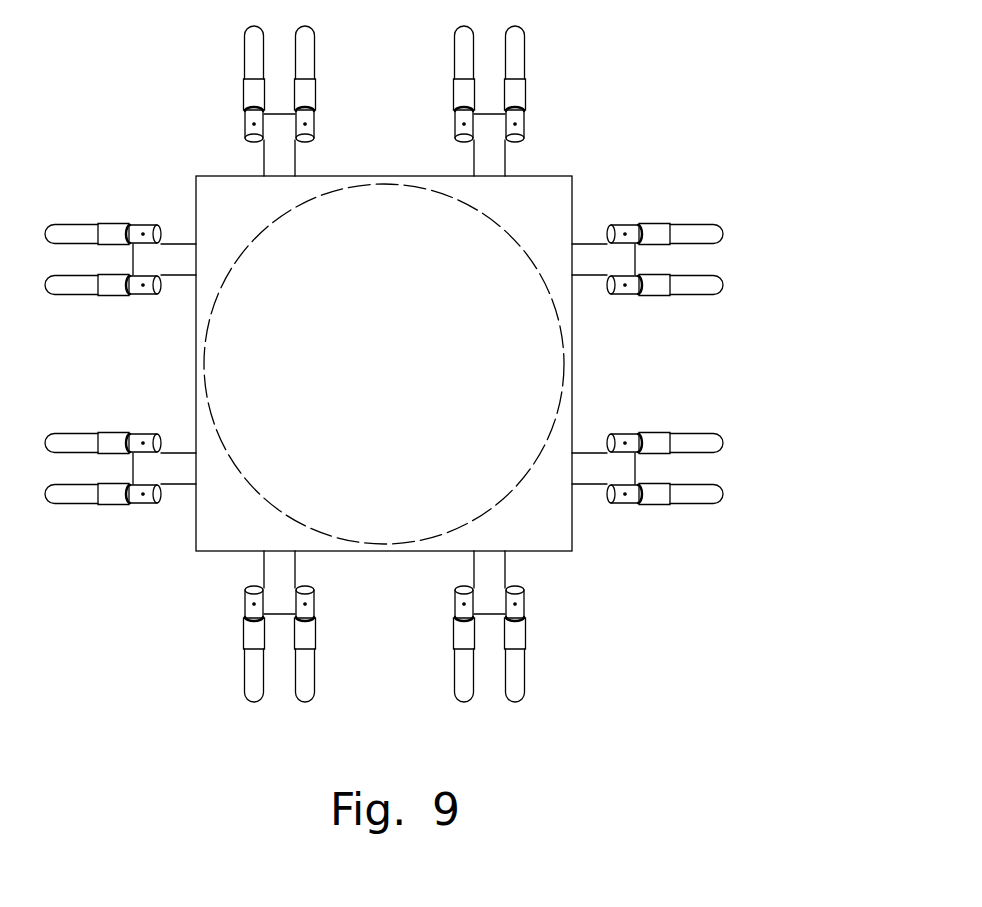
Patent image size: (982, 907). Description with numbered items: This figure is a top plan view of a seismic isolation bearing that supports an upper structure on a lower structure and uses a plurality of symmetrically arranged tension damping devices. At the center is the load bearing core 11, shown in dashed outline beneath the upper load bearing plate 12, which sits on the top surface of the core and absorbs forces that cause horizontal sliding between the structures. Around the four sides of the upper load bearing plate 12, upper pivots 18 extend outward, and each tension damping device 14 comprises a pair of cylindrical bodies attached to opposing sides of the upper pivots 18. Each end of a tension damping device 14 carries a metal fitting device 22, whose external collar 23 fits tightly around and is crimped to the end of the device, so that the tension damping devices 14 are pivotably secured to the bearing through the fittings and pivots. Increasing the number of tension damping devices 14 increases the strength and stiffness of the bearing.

The load bearing core 11 is at (500, 227).
The upper load bearing plate 12 is at (196, 190).
The tension damping device 14 is at (722, 482).
The upper pivot 18 is at (292, 155).
The metal fitting device 22 is at (242, 647).
The external collar 23 is at (242, 602).